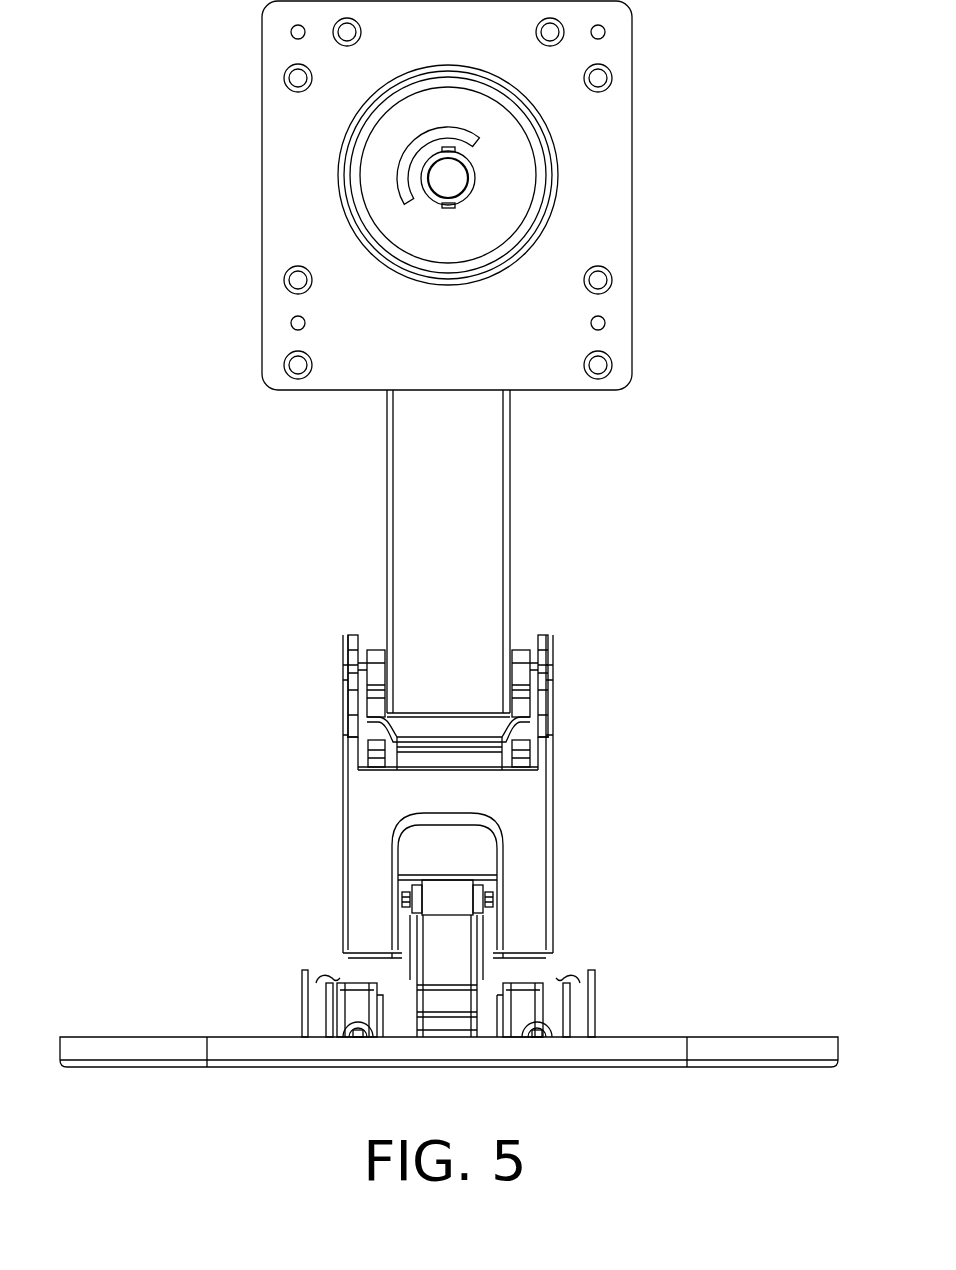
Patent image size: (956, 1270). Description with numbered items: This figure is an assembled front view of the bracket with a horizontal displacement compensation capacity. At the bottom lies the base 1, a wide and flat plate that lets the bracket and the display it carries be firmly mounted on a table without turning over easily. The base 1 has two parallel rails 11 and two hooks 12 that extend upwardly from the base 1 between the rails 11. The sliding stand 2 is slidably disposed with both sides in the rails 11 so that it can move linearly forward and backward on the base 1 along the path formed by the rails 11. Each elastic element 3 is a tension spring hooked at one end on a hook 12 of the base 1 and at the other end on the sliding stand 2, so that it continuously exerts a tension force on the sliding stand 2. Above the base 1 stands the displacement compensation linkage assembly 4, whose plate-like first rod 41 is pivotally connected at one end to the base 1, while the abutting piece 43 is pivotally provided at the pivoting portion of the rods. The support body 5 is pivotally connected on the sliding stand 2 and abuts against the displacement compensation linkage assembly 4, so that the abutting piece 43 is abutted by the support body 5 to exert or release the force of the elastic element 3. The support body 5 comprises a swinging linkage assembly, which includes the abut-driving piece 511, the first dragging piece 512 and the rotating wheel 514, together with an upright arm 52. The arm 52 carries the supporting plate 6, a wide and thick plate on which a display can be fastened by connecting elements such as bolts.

The base 1 is at (449, 1026).
The rails 11 is at (313, 997).
The hooks 12 is at (358, 1038).
The sliding stand 2 is at (540, 1008).
The elastic element 3 is at (351, 1012).
The displacement compensation linkage assembly 4 is at (458, 943).
The first rod 41 is at (488, 947).
The abutting piece 43 is at (445, 890).
The support body 5 is at (454, 758).
The abut-driving piece 511 is at (440, 848).
The first dragging piece 512 is at (532, 875).
The rotating wheel 514 is at (357, 635).
The arm 52 is at (488, 535).
The supporting plate 6 is at (256, 186).